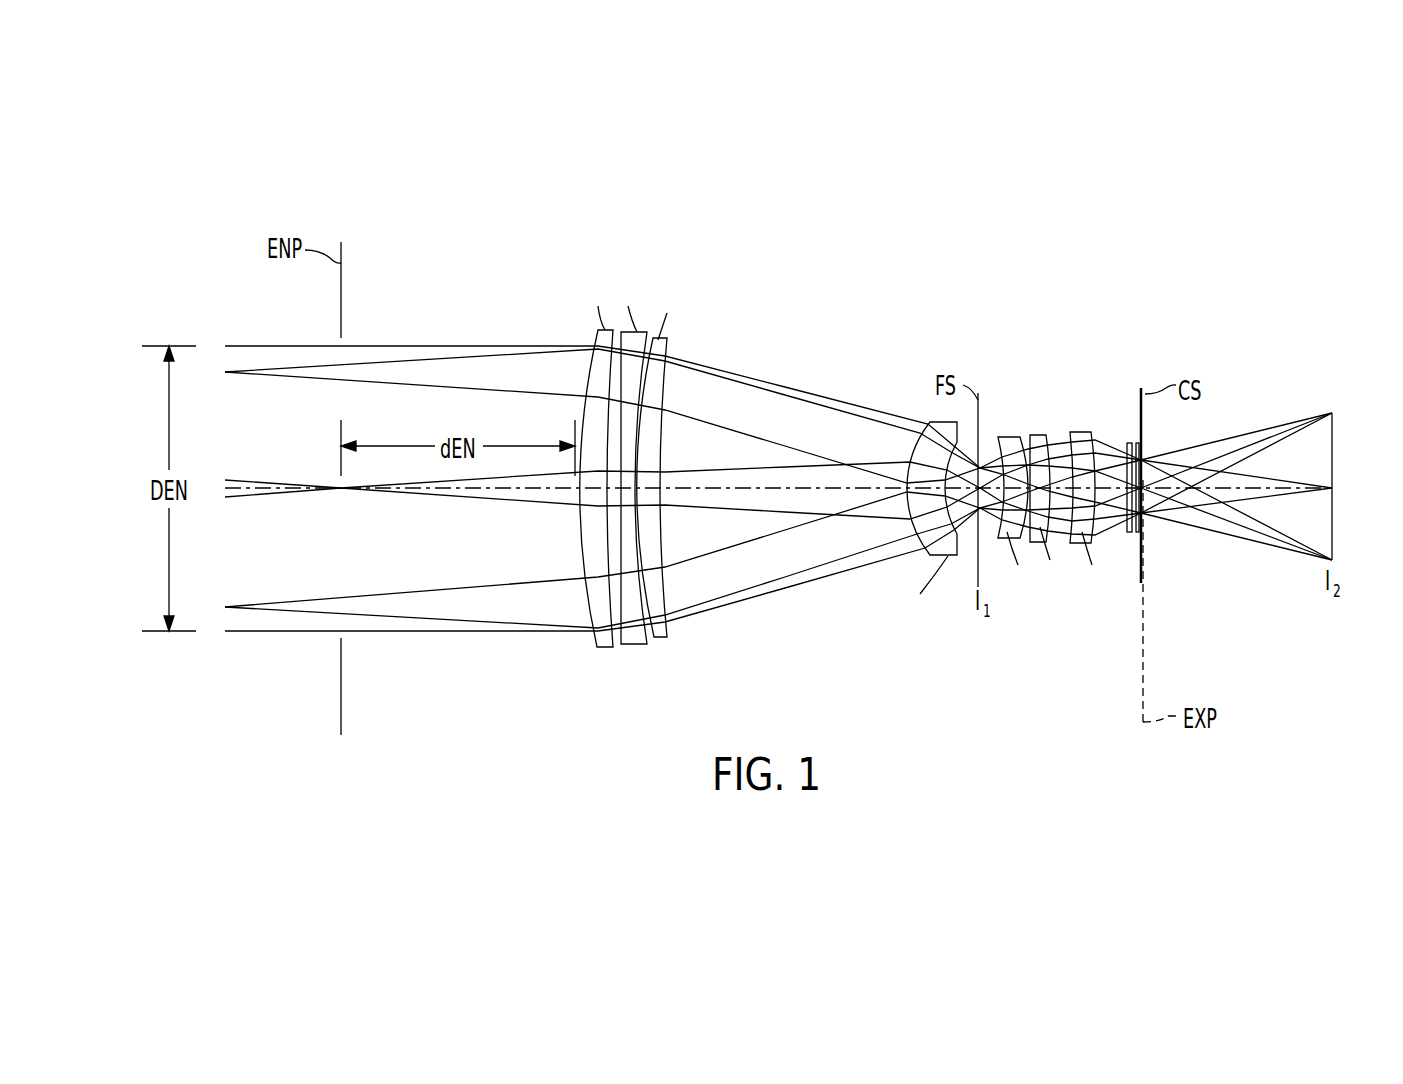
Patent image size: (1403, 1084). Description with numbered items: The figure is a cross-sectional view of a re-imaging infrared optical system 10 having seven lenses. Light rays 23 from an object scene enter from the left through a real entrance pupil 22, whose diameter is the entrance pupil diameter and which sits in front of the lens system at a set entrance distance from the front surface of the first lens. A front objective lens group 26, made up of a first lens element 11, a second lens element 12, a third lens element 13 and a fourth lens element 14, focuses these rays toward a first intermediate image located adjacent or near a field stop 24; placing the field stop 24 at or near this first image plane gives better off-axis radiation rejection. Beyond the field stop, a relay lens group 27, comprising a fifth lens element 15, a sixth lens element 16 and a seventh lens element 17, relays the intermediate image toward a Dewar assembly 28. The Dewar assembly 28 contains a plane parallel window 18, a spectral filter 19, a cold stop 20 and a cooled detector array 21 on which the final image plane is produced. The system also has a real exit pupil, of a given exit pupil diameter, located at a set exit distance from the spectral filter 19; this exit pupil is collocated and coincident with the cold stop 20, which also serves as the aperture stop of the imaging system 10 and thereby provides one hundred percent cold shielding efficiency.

The re-imaging infrared optical system 10 is at (826, 207).
The lens element L1 11 is at (590, 668).
The lens element L2 12 is at (628, 668).
The lens element L3 13 is at (670, 662).
The lens element L4 14 is at (934, 440).
The lens element L5 15 is at (1006, 446).
The lens element L6 16 is at (1040, 450).
The lens element L7 17 is at (1082, 445).
The plane parallel window 18 is at (1128, 450).
The spectral filter 19 is at (1136, 450).
The cold stop 20 is at (1176, 593).
The cooled detector array 21 is at (1368, 555).
The real entrance pupil 22 is at (375, 727).
The light rays 23 is at (516, 586).
The field stop 24 is at (958, 617).
The front objective lens group 26 is at (641, 437).
The relay lens group 27 is at (928, 421).
The Dewar assembly 28 is at (1128, 444).